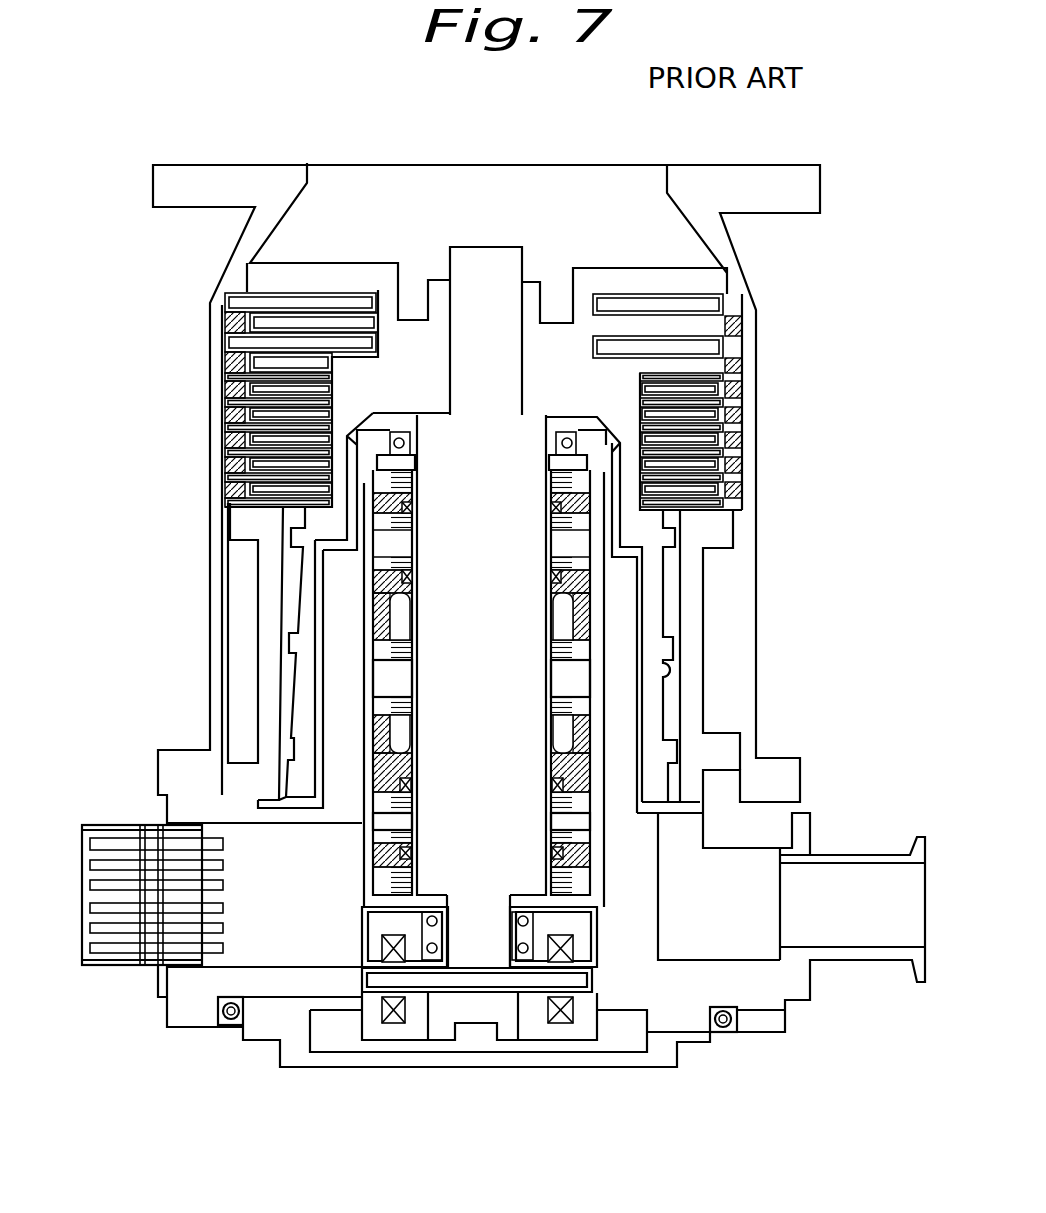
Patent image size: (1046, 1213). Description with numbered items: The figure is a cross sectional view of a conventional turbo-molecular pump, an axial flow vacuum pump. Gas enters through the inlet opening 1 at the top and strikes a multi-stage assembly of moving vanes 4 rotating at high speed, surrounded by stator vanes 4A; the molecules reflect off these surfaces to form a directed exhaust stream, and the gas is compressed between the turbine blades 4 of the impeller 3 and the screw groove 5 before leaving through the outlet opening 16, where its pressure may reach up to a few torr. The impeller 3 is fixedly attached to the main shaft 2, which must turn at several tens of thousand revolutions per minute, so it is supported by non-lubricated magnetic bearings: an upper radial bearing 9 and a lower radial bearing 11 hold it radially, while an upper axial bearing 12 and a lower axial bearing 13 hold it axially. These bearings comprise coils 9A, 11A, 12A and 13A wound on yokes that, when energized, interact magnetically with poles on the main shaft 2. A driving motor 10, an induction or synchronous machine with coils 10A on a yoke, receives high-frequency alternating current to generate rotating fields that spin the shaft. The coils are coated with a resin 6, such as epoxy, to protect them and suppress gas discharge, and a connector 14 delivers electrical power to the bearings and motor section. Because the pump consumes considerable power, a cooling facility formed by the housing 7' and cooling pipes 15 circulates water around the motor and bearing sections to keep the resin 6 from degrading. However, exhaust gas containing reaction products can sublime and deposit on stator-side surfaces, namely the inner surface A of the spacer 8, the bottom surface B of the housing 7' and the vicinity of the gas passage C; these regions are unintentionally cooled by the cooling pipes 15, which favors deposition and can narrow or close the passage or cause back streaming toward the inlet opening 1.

The inlet opening 1 is at (352, 182).
The main shaft 2 is at (473, 262).
The impeller 3 is at (567, 383).
The moving vanes 4 is at (713, 372).
The stator vanes 4A is at (737, 400).
The screw groove 5 is at (668, 540).
The resin 6 is at (593, 580).
The housing 7' is at (722, 893).
The spacer 8 is at (697, 688).
The upper radial bearing 9 is at (405, 546).
The coil 9A is at (410, 507).
The driving motor 10 is at (400, 683).
The coils 10A is at (400, 628).
The lower radial bearing 11 is at (383, 822).
The coil 11A is at (410, 798).
The upper axial bearing 12 is at (590, 950).
The coil 12A is at (560, 945).
The lower axial bearing 13 is at (580, 1035).
The coil 13A is at (562, 1022).
The connector 14 is at (118, 825).
The cooling pipes 15 is at (232, 1030).
The outlet opening 16 is at (880, 880).
The inner surface of the spacer A is at (672, 668).
The bottom surface of the housing B is at (282, 790).
The gas passage C is at (660, 940).